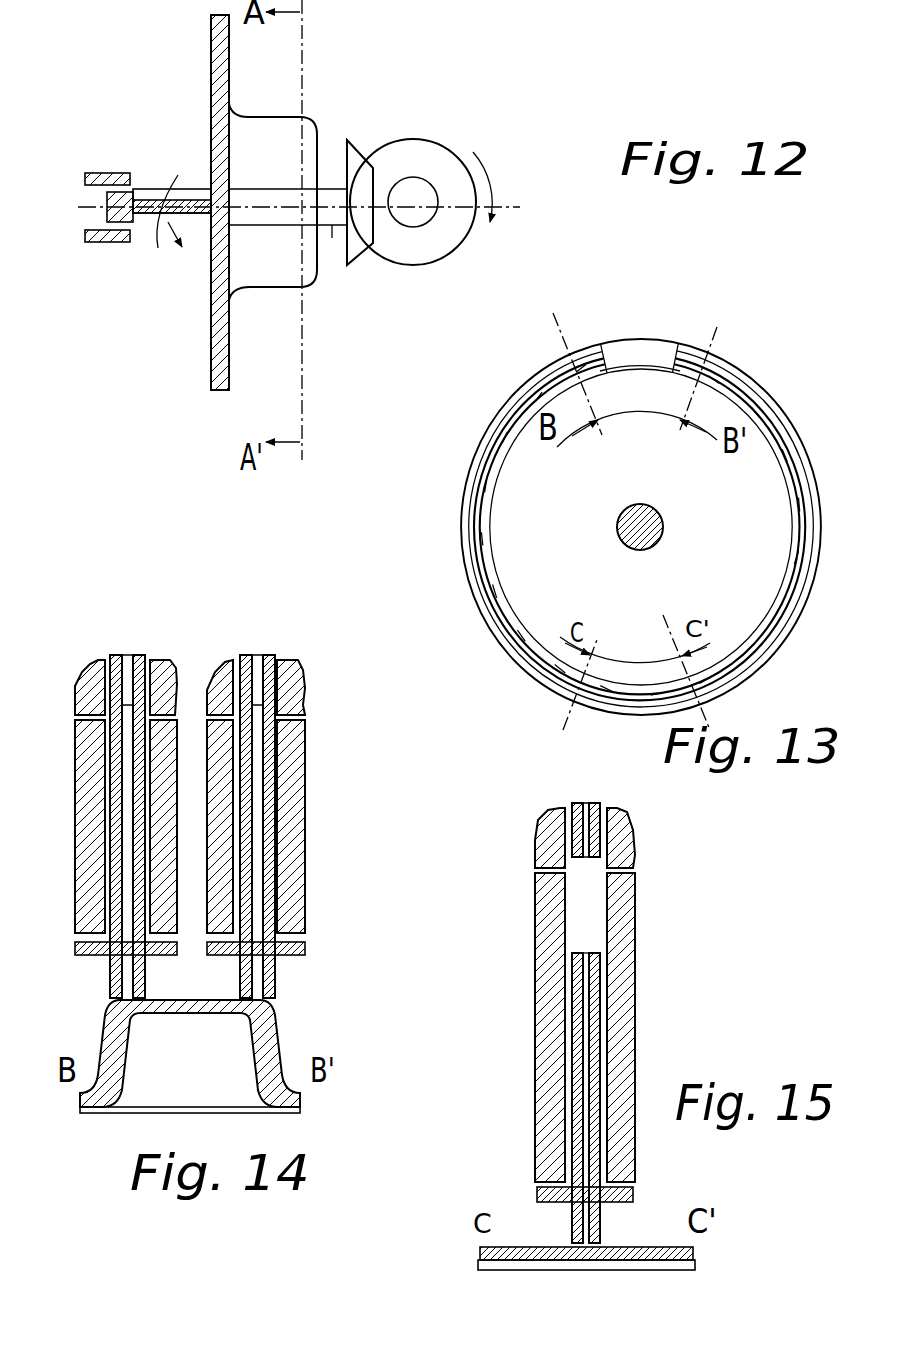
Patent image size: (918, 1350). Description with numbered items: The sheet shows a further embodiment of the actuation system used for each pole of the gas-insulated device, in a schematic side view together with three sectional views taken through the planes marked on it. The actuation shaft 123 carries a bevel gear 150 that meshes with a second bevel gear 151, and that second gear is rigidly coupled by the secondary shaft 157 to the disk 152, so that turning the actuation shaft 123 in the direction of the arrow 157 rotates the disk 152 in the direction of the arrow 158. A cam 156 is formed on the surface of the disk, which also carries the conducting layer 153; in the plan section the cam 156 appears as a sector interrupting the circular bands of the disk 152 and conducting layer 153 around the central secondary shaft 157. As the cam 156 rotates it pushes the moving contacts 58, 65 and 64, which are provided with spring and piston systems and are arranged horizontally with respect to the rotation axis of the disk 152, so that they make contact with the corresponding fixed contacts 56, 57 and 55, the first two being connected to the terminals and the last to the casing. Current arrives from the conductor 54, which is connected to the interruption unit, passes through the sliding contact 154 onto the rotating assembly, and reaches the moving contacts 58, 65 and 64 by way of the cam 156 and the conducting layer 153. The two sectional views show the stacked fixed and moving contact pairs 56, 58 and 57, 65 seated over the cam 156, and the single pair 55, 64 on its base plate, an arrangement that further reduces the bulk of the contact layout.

In FIG. 12, the conductor 54 is at (84, 174).
In FIG. 12, the actuation shaft 123 is at (440, 182).
In FIG. 12, the bevel gear 150 is at (442, 138).
In FIG. 12, the bevel gear 151 is at (358, 146).
In FIG. 12, the disk 152 is at (207, 375).
In FIG. 13, the disk 152 is at (745, 338).
In FIG. 12, the conducting layer 153 is at (238, 352).
In FIG. 13, the conducting layer 153 is at (749, 386).
In FIG. 12, the sliding contact 154 is at (149, 186).
In FIG. 12, the cam 156 is at (309, 305).
In FIG. 13, the cam 156 is at (644, 340).
In FIG. 14, the cam 156 is at (285, 1046).
In FIG. 12, the secondary shaft 157 is at (492, 170).
In FIG. 13, the secondary shaft 157 is at (613, 536).
In FIG. 12, the arrow 158 is at (170, 244).
In FIG. 15, the fixed contact 55 is at (640, 845).
In FIG. 14, the fixed contact 56 is at (76, 660).
In FIG. 14, the fixed contact 57 is at (305, 662).
In FIG. 14, the moving contact 58 is at (72, 878).
In FIG. 15, the moving contact 64 is at (638, 995).
In FIG. 14, the moving contact 65 is at (314, 810).